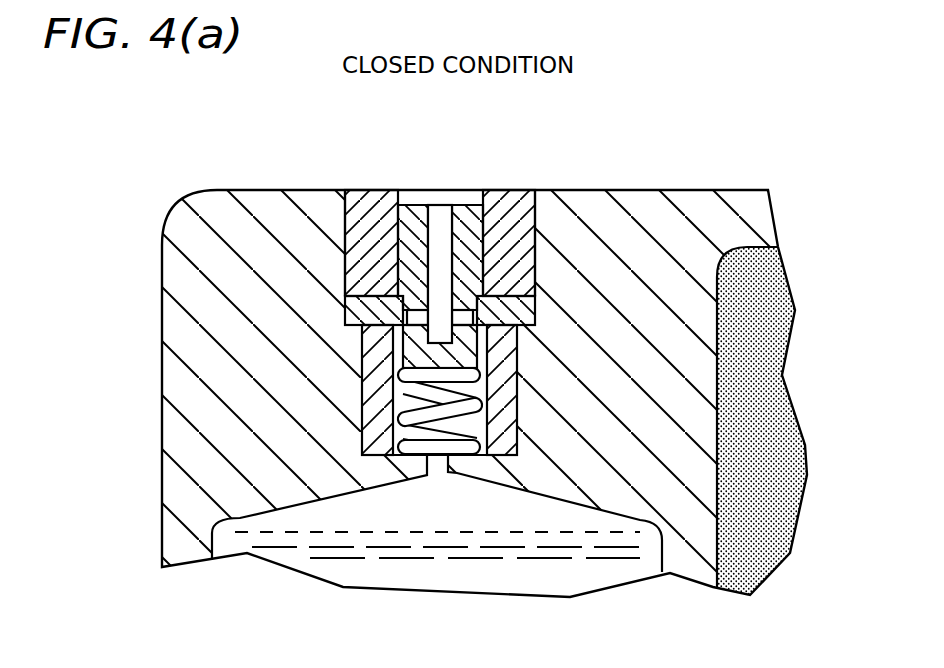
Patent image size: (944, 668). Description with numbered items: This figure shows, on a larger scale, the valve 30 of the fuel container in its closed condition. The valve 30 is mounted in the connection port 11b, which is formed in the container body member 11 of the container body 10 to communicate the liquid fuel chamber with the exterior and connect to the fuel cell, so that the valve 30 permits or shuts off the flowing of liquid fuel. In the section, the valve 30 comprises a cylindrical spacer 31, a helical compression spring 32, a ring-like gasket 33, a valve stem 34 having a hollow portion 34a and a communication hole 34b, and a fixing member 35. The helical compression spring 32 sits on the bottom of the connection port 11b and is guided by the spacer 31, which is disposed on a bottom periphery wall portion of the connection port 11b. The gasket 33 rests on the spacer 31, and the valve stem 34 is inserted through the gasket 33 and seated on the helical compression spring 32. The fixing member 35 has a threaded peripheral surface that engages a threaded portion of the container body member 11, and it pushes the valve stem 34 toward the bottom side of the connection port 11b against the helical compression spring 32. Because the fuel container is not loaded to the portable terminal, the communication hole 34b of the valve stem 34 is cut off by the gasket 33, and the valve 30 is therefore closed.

The container body 10 is at (484, 370).
The container body member 11 is at (688, 200).
The connection port 11b is at (537, 225).
The valve 30 is at (332, 278).
The cylindrical spacer 31 is at (368, 358).
The helical compression spring 32 is at (400, 412).
The ring-like gasket 33 is at (347, 307).
The valve stem 34 is at (452, 251).
The hollow portion 34a is at (445, 215).
The communication hole 34b is at (417, 307).
The fixing member 35 is at (351, 224).